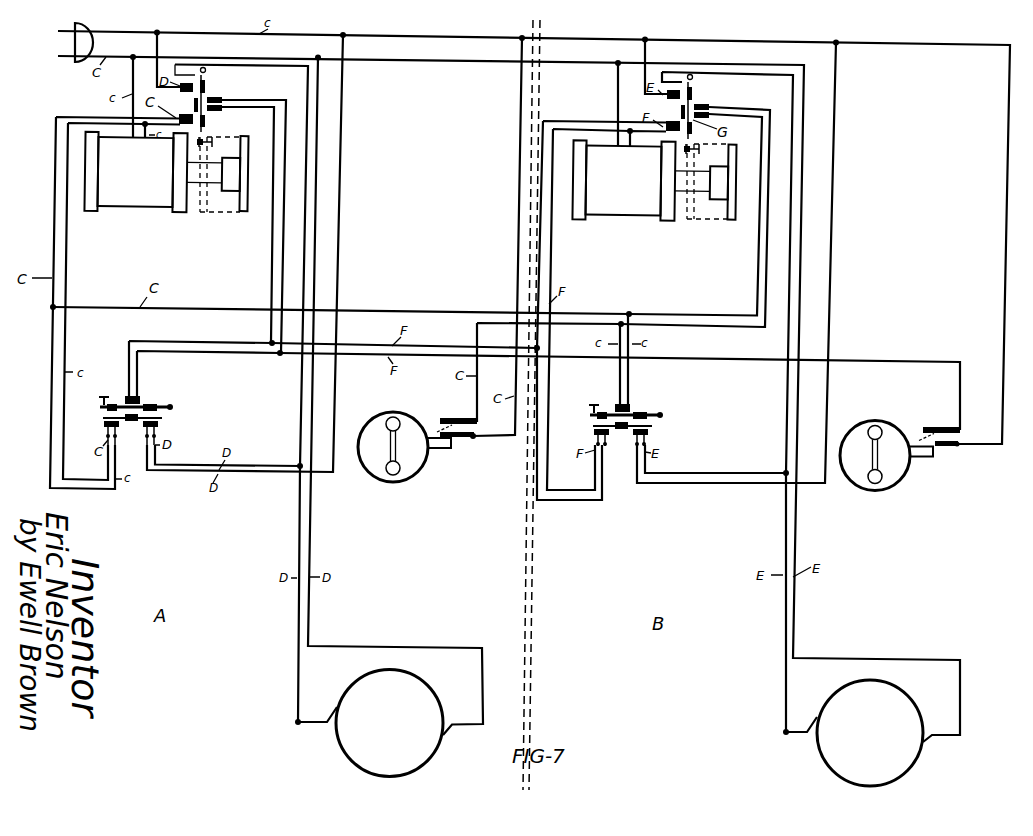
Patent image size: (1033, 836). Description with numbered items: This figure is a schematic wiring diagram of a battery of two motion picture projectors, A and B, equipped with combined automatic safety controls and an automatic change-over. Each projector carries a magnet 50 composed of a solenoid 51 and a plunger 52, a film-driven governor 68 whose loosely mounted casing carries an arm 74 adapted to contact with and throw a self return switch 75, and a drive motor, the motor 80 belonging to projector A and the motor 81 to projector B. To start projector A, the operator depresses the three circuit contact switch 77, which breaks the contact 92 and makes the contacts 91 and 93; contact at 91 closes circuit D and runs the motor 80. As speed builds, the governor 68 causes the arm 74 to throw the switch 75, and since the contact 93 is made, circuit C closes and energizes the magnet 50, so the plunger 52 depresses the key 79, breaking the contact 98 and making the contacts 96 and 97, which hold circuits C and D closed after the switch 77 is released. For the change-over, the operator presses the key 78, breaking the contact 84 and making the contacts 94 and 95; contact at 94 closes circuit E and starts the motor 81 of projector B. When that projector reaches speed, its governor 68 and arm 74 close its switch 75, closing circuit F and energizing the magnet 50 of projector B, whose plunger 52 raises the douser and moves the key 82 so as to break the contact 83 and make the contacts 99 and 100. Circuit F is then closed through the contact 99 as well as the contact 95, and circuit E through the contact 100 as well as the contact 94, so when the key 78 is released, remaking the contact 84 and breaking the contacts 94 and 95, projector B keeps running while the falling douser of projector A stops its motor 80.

The magnet 50 is at (115, 200).
The solenoid 51 is at (156, 200).
The plunger 52 is at (243, 176).
The governor 68 is at (376, 428).
The arm 74 is at (453, 448).
The self return switch 75 is at (446, 417).
The three circuit contact switch 77 is at (132, 412).
The key 78 is at (621, 416).
The key 79 is at (210, 88).
The motor 80 is at (389, 723).
The motor 81 is at (870, 733).
The key 82 is at (690, 89).
The contact 83 is at (693, 106).
The contact 84 is at (630, 410).
The contact 91 is at (152, 403).
The contact 92 is at (140, 398).
The contact 93 is at (105, 414).
The contact 94 is at (660, 408).
The contact 95 is at (611, 398).
The contact 96 is at (195, 113).
The contact 97 is at (190, 70).
The contact 98 is at (212, 110).
The contact 99 is at (678, 122).
The contact 100 is at (675, 82).